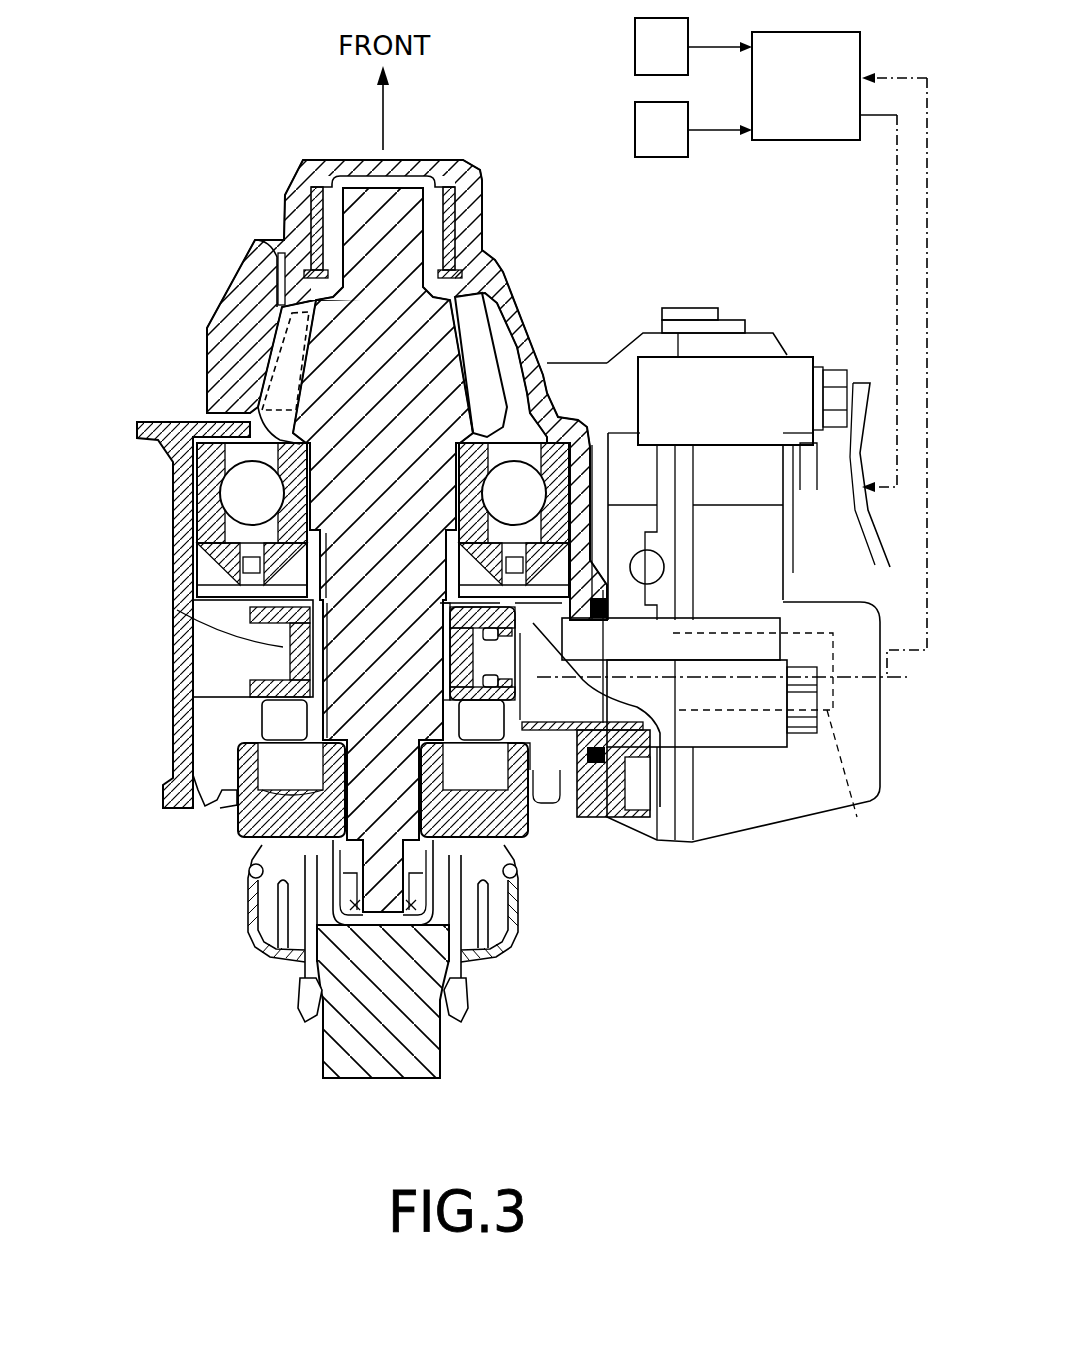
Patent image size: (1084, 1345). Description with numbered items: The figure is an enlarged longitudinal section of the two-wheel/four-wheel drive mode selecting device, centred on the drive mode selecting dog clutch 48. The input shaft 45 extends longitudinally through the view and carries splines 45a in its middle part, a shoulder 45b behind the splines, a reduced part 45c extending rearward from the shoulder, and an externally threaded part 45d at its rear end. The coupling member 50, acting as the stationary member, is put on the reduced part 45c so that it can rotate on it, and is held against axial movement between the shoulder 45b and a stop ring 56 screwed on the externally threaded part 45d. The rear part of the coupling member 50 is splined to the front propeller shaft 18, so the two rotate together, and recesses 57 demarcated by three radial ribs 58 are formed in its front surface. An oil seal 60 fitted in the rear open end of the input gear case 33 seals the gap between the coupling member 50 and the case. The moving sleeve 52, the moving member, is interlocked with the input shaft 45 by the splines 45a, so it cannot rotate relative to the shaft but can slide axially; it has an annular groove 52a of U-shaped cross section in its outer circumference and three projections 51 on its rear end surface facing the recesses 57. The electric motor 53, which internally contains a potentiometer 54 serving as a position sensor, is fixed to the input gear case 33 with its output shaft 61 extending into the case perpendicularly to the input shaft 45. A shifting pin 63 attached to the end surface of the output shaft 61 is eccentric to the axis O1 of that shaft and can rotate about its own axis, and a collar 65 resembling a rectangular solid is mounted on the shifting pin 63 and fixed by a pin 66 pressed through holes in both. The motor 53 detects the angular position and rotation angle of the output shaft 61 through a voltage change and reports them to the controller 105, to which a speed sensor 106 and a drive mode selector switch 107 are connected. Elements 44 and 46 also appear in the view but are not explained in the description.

The front propeller shaft 18 is at (350, 1045).
The input gear case 33 is at (182, 555).
The tapered roller bearing / housing 44 is at (477, 350).
The input shaft 45 is at (367, 509).
The splines 45a is at (328, 628).
The shoulder 45b is at (330, 702).
The reduced part 45c is at (356, 764).
The externally threaded part 45d is at (442, 1015).
The ball bearing 46 is at (243, 495).
The drive mode selecting dog clutch 48 is at (320, 818).
The coupling member 50 is at (253, 820).
The projections 51 is at (280, 723).
The moving sleeve 52 is at (250, 683).
The annular groove 52a is at (190, 633).
The electric motor 53 is at (774, 309).
The potentiometer 54 is at (860, 700).
The stop ring 56 is at (520, 890).
The recesses 57 is at (287, 767).
The radial ribs 58 is at (530, 827).
The oil seal 60 is at (217, 813).
The output shaft 61 is at (660, 700).
The shifting pin 63 is at (477, 657).
The collar 65 is at (477, 631).
The pin 66 is at (457, 607).
The controller 105 is at (838, 104).
The speed sensor 106 is at (640, 47).
The drive mode selector switch 107 is at (640, 130).
The axis of the output shaft O1 is at (887, 723).